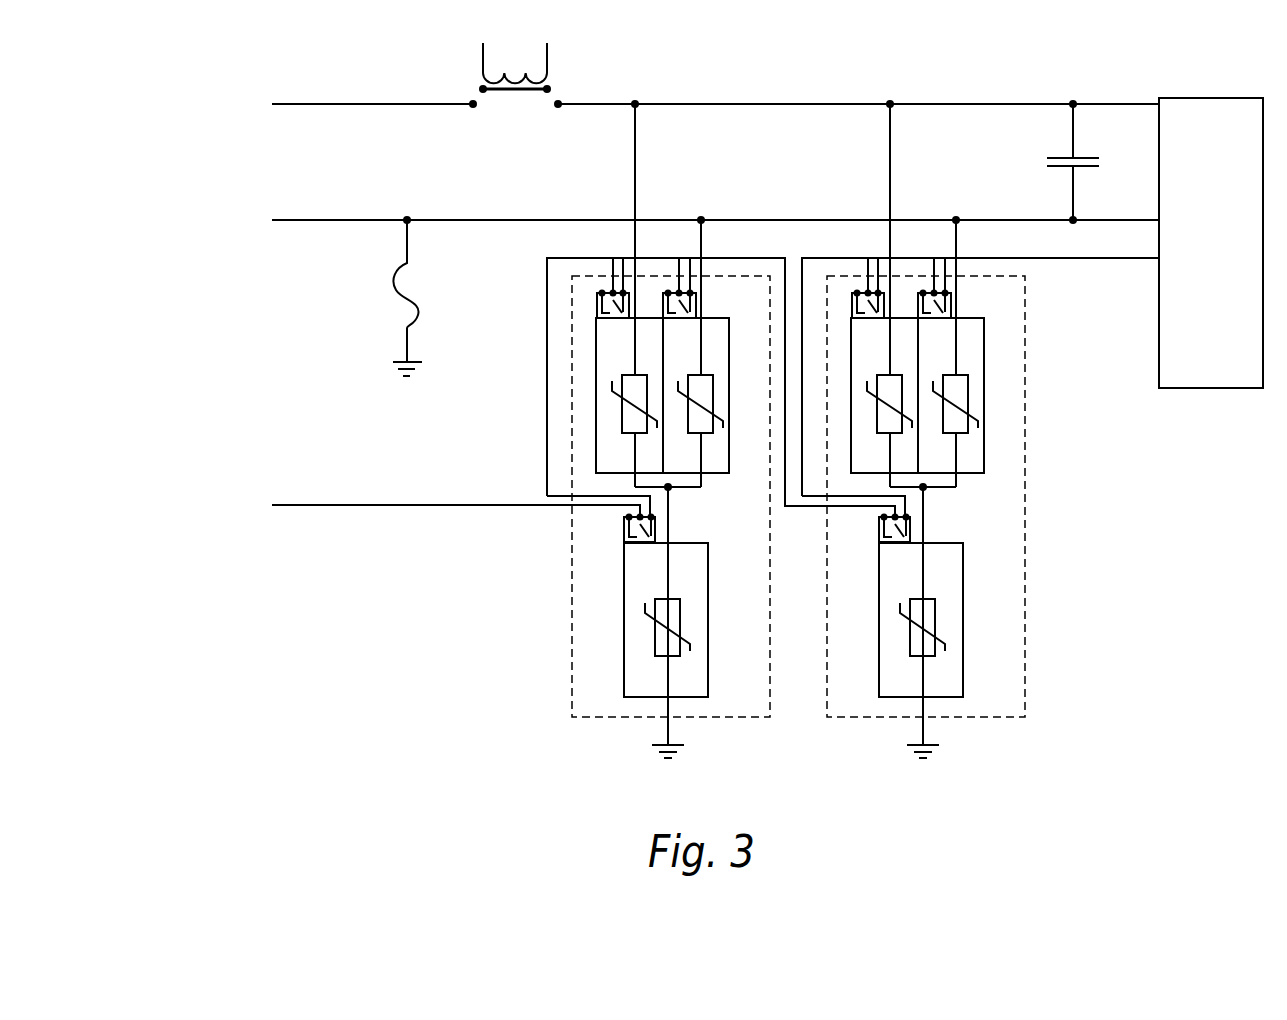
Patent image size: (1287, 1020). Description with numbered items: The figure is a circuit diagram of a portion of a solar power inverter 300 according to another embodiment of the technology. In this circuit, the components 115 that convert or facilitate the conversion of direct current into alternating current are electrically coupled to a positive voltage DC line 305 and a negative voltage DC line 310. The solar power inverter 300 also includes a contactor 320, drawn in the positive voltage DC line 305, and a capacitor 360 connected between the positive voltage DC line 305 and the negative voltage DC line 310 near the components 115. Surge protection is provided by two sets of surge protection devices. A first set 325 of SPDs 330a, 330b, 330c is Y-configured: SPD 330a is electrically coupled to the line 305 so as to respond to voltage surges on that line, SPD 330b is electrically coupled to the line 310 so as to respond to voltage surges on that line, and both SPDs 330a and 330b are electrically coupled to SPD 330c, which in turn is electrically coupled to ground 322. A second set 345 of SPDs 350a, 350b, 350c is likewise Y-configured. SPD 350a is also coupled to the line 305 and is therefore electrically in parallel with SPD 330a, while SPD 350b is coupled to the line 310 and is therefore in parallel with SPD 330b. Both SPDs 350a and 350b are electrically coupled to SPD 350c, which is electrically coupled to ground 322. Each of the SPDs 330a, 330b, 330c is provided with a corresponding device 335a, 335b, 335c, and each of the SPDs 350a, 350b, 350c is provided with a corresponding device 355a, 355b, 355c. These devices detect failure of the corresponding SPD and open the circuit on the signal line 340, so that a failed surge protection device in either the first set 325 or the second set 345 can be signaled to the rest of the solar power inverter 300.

The solar power inverter 300 is at (697, 419).
The positive voltage DC line 305 is at (237, 104).
The negative voltage DC line 310 is at (237, 220).
The contactor 320 is at (547, 55).
The ground 322 is at (395, 363).
The first set of SPDs 325 is at (572, 705).
The SPD 330a is at (596, 364).
The SPD 330b is at (729, 445).
The SPD 330c is at (710, 643).
The device 335a is at (597, 303).
The device 335b is at (697, 305).
The device 335c is at (624, 528).
The signal line 340 is at (206, 506).
The second set of SPDs 345 is at (827, 705).
The SPD 350a is at (851, 428).
The SPD 350b is at (984, 447).
The SPD 350c is at (965, 643).
The device 355a is at (852, 303).
The device 355b is at (952, 305).
The device 355c is at (879, 528).
The capacitor 360 is at (1085, 157).
The components 115 is at (1207, 98).